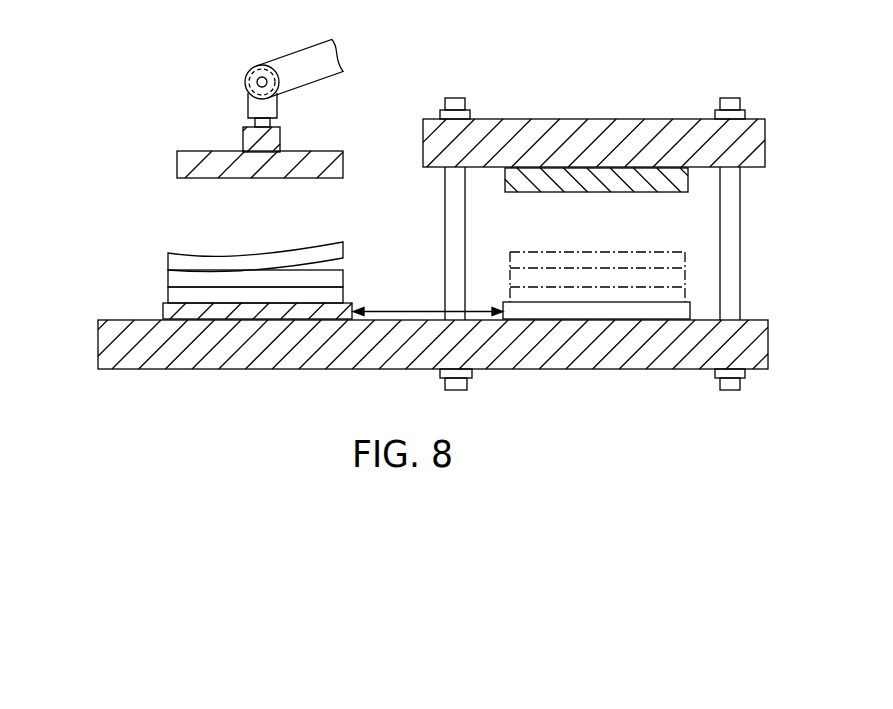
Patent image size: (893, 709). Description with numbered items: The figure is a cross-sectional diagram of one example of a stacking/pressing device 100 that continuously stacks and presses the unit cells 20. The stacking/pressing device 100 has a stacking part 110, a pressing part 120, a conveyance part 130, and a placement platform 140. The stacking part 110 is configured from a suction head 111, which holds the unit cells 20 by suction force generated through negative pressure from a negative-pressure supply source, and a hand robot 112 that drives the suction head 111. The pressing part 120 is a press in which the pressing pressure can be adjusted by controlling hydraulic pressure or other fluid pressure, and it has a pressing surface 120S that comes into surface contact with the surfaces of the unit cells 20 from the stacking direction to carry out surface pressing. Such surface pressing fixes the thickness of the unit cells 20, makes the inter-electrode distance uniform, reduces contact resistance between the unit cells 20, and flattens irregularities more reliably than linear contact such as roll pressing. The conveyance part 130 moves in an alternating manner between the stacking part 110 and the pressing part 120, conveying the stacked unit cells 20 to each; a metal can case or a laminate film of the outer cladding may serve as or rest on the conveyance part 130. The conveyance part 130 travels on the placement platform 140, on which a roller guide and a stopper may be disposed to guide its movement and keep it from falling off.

The stacking/pressing device 100 is at (116, 38).
The stacking part 110 is at (187, 47).
The suction head 111 is at (216, 160).
The hand robot 112 is at (253, 60).
The pressing part 120 is at (528, 143).
The pressing surface 120S is at (577, 193).
The conveyance part 130 is at (163, 306).
The placement platform 140 is at (120, 348).
The unit cell 20 is at (324, 250).